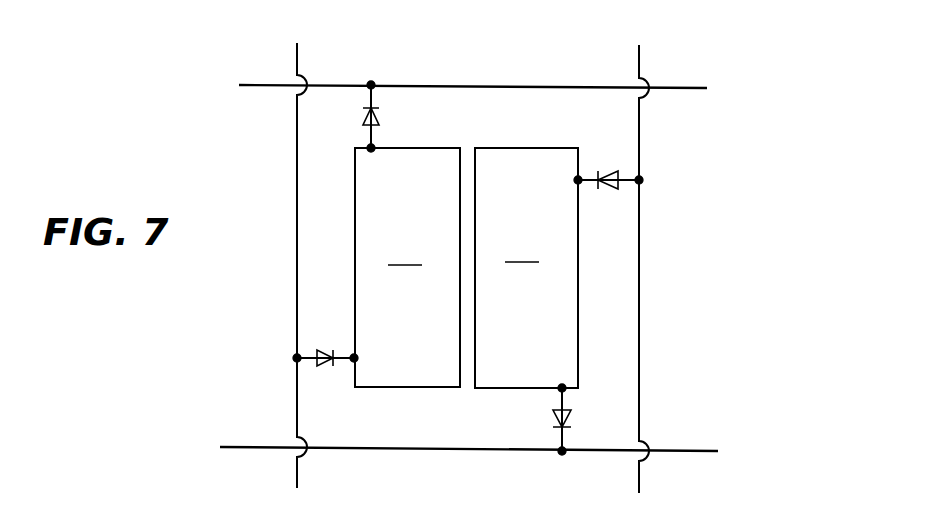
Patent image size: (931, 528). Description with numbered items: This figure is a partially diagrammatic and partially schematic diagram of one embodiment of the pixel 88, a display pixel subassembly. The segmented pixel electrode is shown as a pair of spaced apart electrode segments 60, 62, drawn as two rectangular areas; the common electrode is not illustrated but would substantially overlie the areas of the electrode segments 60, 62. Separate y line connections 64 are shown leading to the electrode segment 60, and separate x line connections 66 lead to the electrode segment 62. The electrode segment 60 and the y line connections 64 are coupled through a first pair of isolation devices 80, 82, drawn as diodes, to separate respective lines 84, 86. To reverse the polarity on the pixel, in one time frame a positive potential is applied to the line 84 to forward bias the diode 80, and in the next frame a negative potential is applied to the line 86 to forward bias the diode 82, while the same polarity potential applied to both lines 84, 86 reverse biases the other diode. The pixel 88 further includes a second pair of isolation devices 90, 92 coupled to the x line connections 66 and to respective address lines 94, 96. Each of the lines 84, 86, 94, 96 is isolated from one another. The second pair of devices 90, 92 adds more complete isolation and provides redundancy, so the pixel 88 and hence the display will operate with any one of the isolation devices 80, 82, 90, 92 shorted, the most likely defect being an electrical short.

The electrode segment 60 is at (407, 267).
The electrode segment 62 is at (526, 268).
The y line connection 64 is at (369, 137).
The x line connection 66 is at (592, 176).
The isolation device 80 is at (325, 347).
The isolation device 82 is at (383, 113).
The line 84 is at (297, 290).
The line 86 is at (515, 85).
The pixel 88 is at (714, 155).
The isolation device 90 is at (608, 188).
The isolation device 92 is at (553, 417).
The address line 94 is at (660, 302).
The address line 96 is at (471, 452).